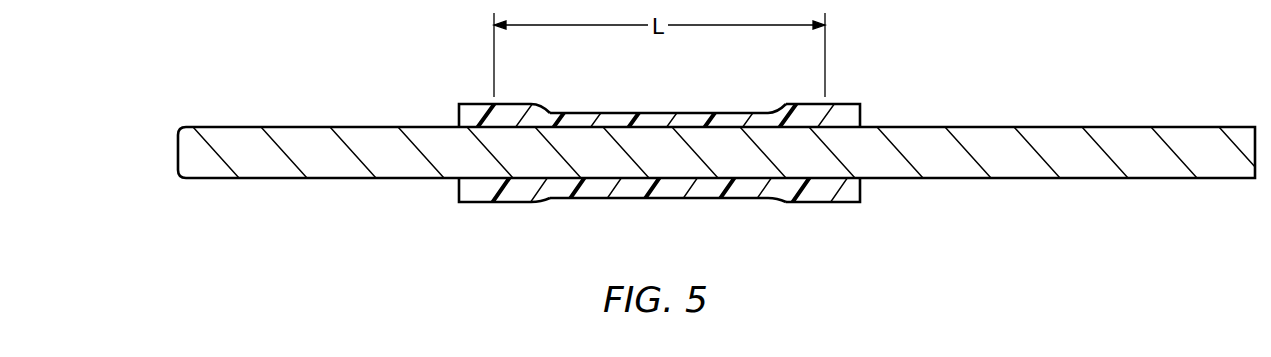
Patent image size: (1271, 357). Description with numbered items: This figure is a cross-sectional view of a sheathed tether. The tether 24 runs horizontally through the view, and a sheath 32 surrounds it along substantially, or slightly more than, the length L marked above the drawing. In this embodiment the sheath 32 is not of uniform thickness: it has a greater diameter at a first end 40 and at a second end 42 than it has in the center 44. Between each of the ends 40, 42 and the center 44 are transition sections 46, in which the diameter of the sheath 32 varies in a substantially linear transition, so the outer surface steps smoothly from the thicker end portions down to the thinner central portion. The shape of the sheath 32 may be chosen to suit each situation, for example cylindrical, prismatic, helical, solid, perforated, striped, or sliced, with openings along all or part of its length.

The tether 24 is at (370, 138).
The sheath 32 is at (614, 120).
The first end 40 is at (846, 204).
The second end 42 is at (468, 204).
The center 44 is at (660, 200).
The transition sections 46 is at (542, 202).